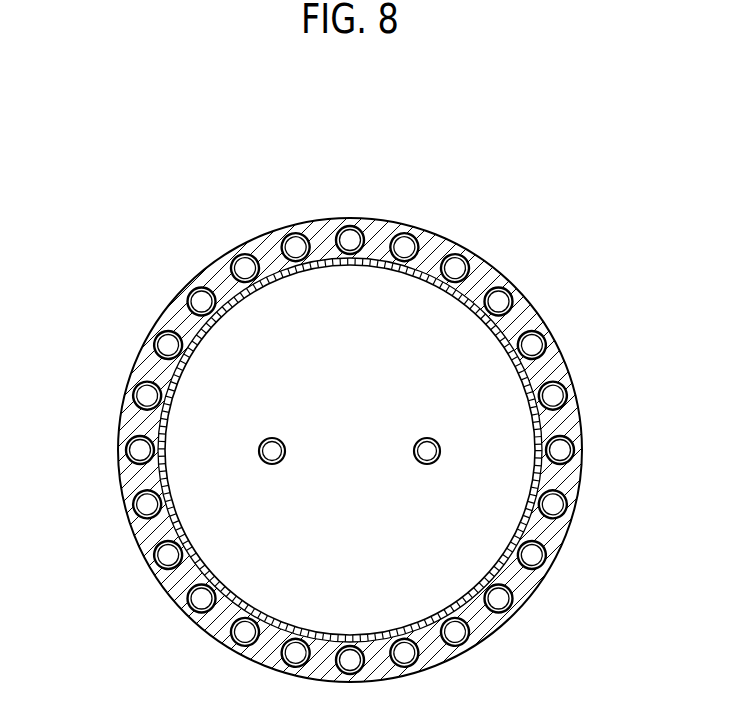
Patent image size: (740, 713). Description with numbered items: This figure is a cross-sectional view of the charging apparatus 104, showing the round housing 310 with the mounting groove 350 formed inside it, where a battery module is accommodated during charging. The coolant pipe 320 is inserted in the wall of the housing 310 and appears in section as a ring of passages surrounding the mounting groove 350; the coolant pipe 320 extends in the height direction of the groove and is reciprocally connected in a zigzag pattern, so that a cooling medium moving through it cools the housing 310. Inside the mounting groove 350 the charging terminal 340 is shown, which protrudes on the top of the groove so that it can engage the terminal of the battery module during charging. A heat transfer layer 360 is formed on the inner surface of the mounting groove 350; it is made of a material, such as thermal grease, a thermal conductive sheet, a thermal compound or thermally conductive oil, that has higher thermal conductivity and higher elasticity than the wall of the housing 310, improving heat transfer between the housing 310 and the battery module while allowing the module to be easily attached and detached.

The charging apparatus 104 is at (333, 154).
The housing 310 is at (565, 473).
The coolant pipe 320 is at (568, 510).
The charging terminal 340 is at (258, 451).
The mounting groove 350 is at (494, 422).
The heat transfer layer 360 is at (493, 567).